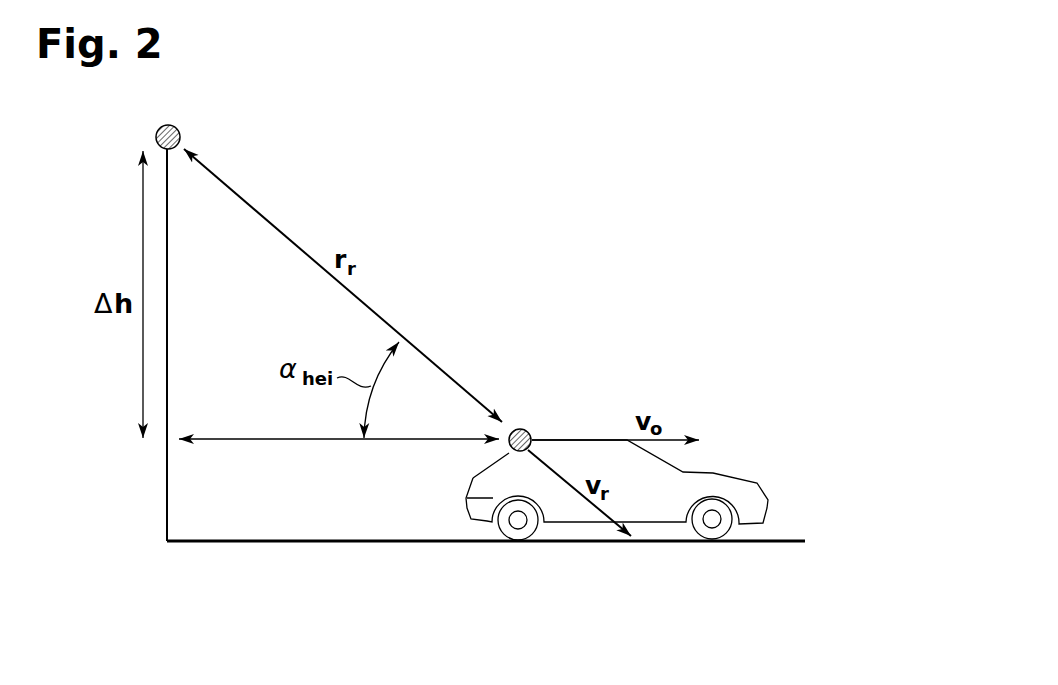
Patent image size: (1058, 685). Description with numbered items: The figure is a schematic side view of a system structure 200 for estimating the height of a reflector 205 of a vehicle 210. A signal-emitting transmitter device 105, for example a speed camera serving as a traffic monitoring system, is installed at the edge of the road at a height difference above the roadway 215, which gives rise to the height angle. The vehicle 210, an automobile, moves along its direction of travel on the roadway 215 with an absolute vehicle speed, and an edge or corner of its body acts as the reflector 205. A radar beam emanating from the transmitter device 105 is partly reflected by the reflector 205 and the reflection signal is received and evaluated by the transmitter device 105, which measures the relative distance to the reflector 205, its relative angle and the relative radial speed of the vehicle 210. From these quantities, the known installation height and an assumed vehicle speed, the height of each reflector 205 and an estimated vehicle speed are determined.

The transmitter device 105 is at (180, 132).
The system structure 200 is at (504, 253).
The reflector 205 is at (527, 429).
The vehicle 210 is at (757, 485).
The roadway 215 is at (390, 544).